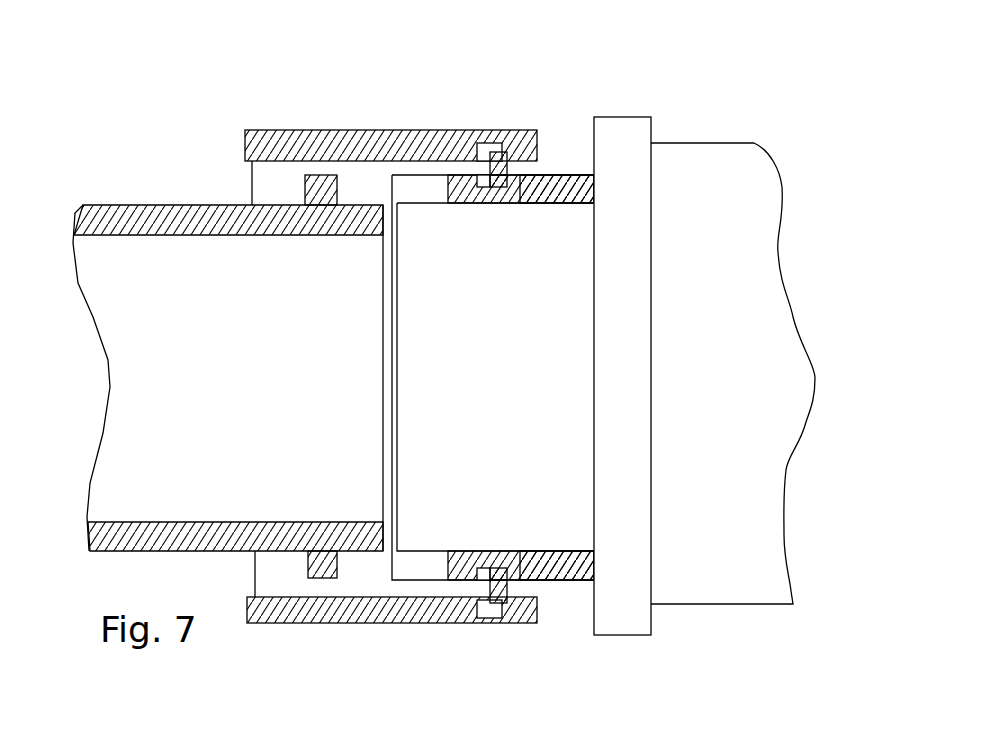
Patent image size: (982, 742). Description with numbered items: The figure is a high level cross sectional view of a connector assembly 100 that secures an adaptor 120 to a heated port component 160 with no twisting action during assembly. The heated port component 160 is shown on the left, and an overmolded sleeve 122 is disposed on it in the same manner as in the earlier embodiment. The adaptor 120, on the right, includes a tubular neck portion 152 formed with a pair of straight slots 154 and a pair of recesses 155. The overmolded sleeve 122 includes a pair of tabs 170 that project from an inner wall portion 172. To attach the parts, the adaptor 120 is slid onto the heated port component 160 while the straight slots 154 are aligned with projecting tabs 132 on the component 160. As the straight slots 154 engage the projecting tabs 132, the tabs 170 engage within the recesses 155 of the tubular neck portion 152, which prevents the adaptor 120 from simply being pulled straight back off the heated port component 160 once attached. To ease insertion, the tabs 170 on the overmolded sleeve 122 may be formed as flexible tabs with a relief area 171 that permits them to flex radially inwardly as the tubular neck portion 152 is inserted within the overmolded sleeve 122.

The connector assembly 100 is at (581, 82).
The adaptor 120 is at (723, 137).
The overmolded sleeve 122 is at (347, 327).
The projecting tabs 132 is at (340, 563).
The tubular neck portion 152 is at (556, 574).
The straight slots 154 is at (420, 568).
The recesses 155 is at (495, 183).
The heated port component 160 is at (137, 197).
The tabs 170 is at (490, 170).
The relief area 171 is at (488, 147).
The inner wall portion 172 is at (270, 158).